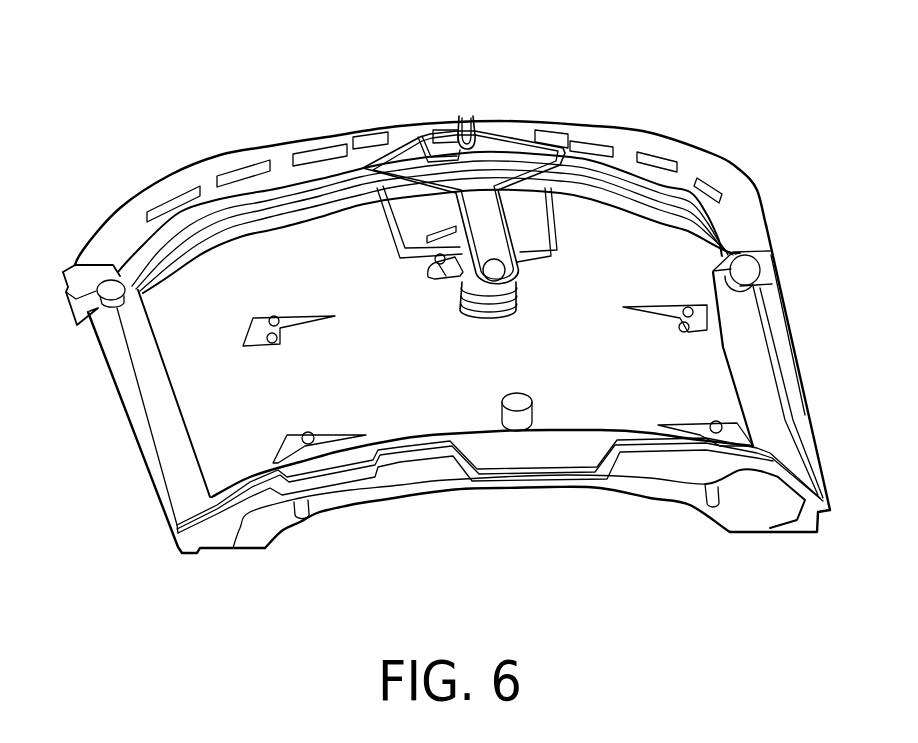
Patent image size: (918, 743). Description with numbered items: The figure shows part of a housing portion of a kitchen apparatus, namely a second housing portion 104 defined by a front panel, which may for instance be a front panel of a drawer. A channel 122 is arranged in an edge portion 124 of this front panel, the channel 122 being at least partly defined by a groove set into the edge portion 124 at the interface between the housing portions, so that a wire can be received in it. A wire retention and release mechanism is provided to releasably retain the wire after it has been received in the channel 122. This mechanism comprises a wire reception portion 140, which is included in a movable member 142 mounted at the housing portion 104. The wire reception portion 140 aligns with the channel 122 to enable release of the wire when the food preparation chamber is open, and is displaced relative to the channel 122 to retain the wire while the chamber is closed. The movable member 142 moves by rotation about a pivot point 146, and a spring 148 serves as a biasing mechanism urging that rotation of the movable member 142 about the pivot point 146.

The second housing portion 104 is at (124, 68).
The channel 122 is at (467, 127).
The edge portion 124 is at (275, 138).
The wire reception portion 140 is at (433, 128).
The movable member 142 is at (503, 160).
The pivot point 146 is at (490, 272).
The spring 148 is at (488, 315).